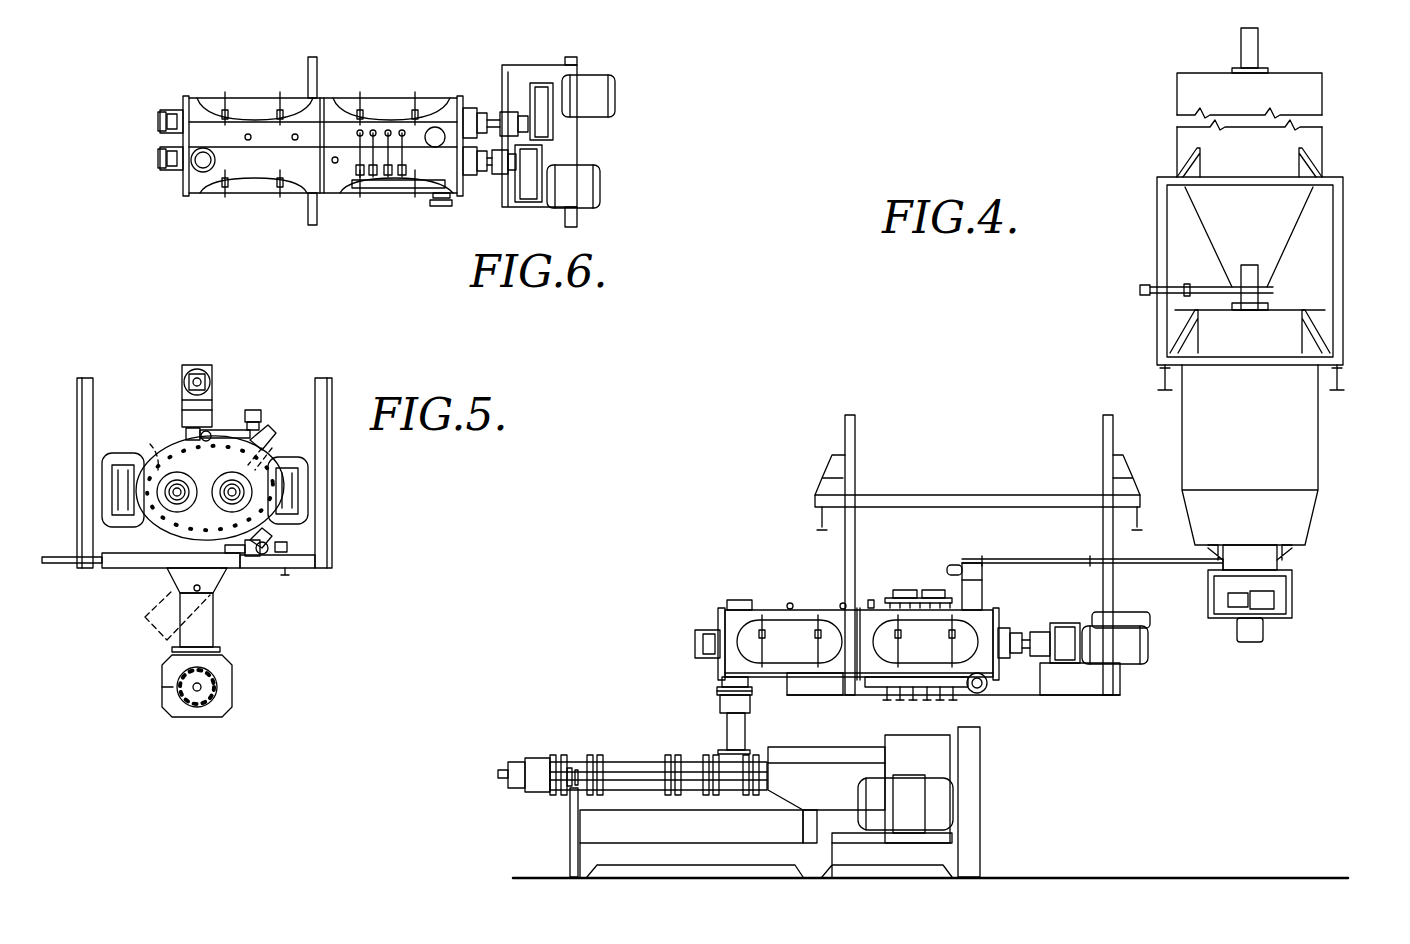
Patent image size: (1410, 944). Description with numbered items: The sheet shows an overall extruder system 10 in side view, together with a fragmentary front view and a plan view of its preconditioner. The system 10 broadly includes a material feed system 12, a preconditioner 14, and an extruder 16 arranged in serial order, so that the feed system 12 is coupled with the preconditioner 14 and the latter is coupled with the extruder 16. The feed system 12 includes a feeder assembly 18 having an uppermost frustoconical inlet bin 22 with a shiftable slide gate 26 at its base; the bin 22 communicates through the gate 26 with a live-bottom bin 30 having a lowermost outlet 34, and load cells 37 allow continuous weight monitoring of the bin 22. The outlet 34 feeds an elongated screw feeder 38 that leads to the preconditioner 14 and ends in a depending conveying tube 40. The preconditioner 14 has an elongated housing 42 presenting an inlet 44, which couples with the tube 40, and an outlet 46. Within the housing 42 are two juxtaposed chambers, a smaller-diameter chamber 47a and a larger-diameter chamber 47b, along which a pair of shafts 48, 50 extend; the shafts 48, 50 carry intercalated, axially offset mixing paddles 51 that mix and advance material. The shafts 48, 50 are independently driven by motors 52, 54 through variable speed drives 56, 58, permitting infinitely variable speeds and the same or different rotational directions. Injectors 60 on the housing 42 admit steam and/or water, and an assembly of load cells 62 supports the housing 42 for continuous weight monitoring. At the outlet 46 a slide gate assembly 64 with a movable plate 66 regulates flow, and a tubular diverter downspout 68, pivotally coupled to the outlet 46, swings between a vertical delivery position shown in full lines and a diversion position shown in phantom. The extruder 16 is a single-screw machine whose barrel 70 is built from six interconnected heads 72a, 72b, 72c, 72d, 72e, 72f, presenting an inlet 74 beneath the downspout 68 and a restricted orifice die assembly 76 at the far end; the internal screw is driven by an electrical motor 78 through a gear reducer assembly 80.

In FIG. 4, the extruder system 10 is at (932, 348).
In FIG. 4, the material feed system 12 is at (1340, 98).
In FIG. 6, the preconditioner 14 is at (640, 84).
In FIG. 5, the preconditioner 14 is at (275, 378).
In FIG. 4, the preconditioner 14 is at (768, 570).
In FIG. 5, the extruder 16 is at (153, 712).
In FIG. 4, the extruder 16 is at (607, 717).
In FIG. 4, the feeder assembly 18 is at (1160, 95).
In FIG. 4, the frustoconical inlet bin 22 is at (1283, 238).
In FIG. 4, the slide gate 26 is at (1148, 283).
In FIG. 4, the live-bottom bin 30 is at (1187, 430).
In FIG. 4, the outlet 34 is at (1248, 550).
In FIG. 4, the load cells 37 is at (1312, 348).
In FIG. 5, the screw feeder 38 is at (200, 372).
In FIG. 4, the screw feeder 38 is at (1063, 565).
In FIG. 5, the conveying tube 40 is at (185, 436).
In FIG. 4, the conveying tube 40 is at (978, 606).
In FIG. 6, the housing 42 is at (328, 178).
In FIG. 4, the housing 42 is at (827, 610).
In FIG. 6, the inlet 44 is at (435, 127).
In FIG. 5, the outlet 46 is at (205, 560).
In FIG. 4, the outlet 46 is at (742, 678).
In FIG. 6, the chamber 47a is at (197, 110).
In FIG. 6, the chamber 47b is at (193, 183).
In FIG. 6, the shaft 48 is at (158, 118).
In FIG. 5, the shaft 48 is at (172, 500).
In FIG. 6, the shaft 50 is at (158, 164).
In FIG. 5, the shaft 50 is at (270, 530).
In FIG. 5, the mixing elements or paddles 51 is at (150, 444).
In FIG. 6, the motor 52 is at (615, 100).
In FIG. 5, the motor 52 is at (108, 483).
In FIG. 4, the motor 52 is at (1150, 628).
In FIG. 6, the motor 54 is at (600, 185).
In FIG. 5, the motor 54 is at (300, 487).
In FIG. 4, the motor 54 is at (1148, 652).
In FIG. 6, the variable speed drive 56 is at (548, 125).
In FIG. 6, the variable speed drive 58 is at (520, 185).
In FIG. 4, the variable speed drive 58 is at (1060, 652).
In FIG. 5, the injectors 60 is at (200, 430).
In FIG. 4, the load cells 62 is at (822, 487).
In FIG. 5, the slide gate assembly 64 is at (135, 565).
In FIG. 4, the slide gate assembly 64 is at (715, 688).
In FIG. 5, the plate 66 is at (62, 558).
In FIG. 5, the diverter downspout 68 is at (205, 630).
In FIG. 4, the diverter downspout 68 is at (728, 732).
In FIG. 5, the barrel 70 is at (230, 677).
In FIG. 4, the barrel 70 is at (540, 755).
In FIG. 4, the head 72a is at (745, 790).
In FIG. 4, the head 72b is at (697, 790).
In FIG. 4, the head 72c is at (657, 790).
In FIG. 4, the head 72d is at (617, 790).
In FIG. 4, the head 72e is at (567, 795).
In FIG. 4, the head 72f is at (540, 790).
In FIG. 4, the inlet 74 is at (738, 758).
In FIG. 5, the die assembly 76 is at (202, 697).
In FIG. 4, the electrical motor 78 is at (938, 810).
In FIG. 4, the gear reducer assembly 80 is at (940, 768).